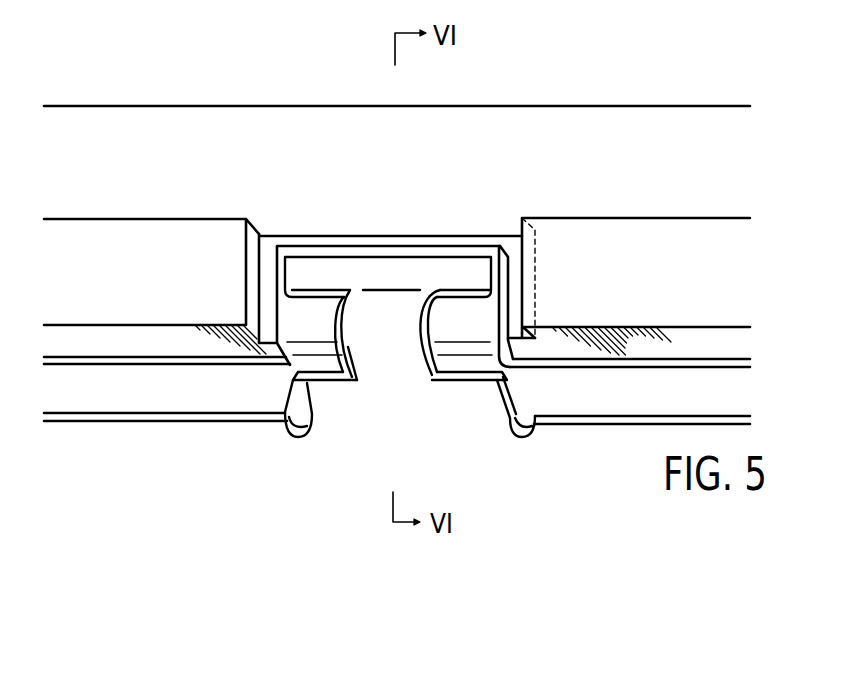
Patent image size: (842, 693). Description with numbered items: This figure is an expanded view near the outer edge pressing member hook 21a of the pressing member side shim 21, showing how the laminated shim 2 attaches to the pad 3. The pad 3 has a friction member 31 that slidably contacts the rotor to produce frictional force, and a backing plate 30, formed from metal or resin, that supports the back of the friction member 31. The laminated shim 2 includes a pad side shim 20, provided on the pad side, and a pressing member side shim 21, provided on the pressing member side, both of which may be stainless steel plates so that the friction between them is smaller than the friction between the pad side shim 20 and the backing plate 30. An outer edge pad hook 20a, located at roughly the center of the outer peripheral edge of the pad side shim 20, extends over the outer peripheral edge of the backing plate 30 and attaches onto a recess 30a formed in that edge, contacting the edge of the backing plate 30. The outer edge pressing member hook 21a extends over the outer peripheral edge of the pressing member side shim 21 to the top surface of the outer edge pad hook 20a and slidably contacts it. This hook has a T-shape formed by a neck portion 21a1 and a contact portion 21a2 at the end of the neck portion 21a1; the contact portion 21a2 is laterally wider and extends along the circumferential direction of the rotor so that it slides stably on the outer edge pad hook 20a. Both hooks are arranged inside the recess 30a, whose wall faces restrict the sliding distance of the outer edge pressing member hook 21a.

The laminated shim 2 is at (220, 510).
The pad 3 is at (253, 50).
The pad side shim 20 is at (150, 390).
The outer edge pad hook 20a is at (320, 323).
The pressing member side shim 21 is at (217, 440).
The outer edge pressing member hook 21a is at (430, 320).
The neck portion 21a1 is at (417, 362).
The contact portion 21a2 is at (457, 268).
The backing plate 30 is at (125, 242).
The recess 30a is at (270, 243).
The friction member 31 is at (217, 137).